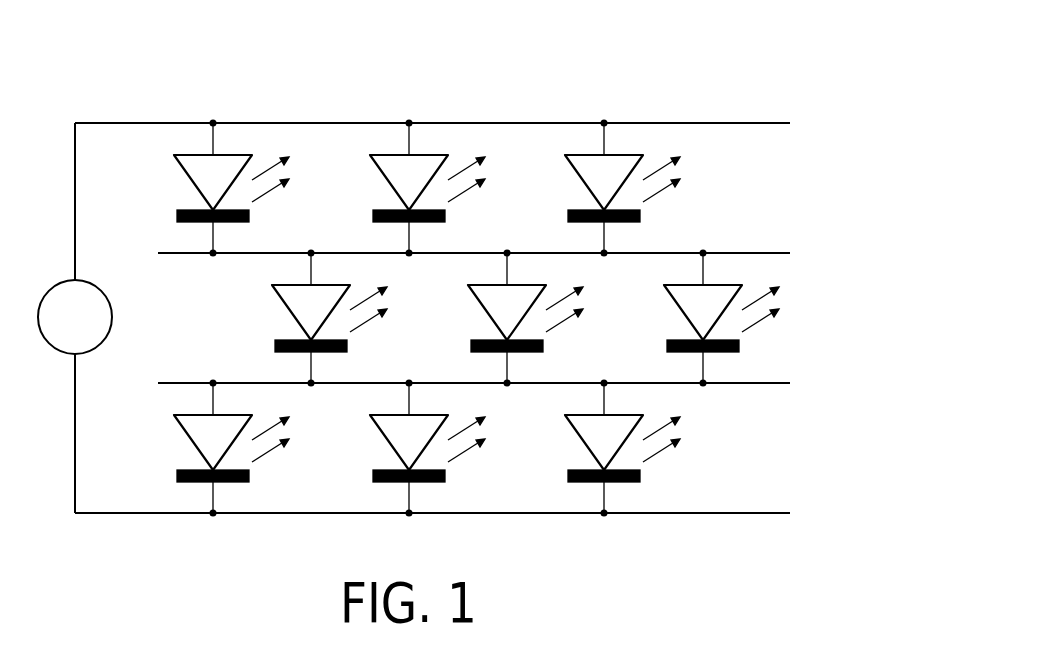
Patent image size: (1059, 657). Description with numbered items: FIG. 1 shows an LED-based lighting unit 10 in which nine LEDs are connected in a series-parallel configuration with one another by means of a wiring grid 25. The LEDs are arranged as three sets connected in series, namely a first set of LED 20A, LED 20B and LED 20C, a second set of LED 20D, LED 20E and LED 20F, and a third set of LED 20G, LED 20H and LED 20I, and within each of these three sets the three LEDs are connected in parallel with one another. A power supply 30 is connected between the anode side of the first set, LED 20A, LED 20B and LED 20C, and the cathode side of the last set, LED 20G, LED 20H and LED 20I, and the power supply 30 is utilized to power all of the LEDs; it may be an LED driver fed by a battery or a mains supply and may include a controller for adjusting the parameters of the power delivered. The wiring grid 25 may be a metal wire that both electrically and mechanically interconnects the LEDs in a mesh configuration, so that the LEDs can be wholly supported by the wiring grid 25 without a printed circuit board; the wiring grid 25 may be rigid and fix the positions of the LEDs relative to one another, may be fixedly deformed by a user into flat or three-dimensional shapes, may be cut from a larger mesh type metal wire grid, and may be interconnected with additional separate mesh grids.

The LED-based lighting unit 10 is at (727, 81).
The wiring grid 25 is at (137, 123).
The power supply 30 is at (48, 292).
The LED 20A is at (195, 189).
The LED 20B is at (391, 189).
The LED 20C is at (586, 189).
The LED 20D is at (293, 319).
The LED 20E is at (489, 319).
The LED 20F is at (685, 319).
The LED 20G is at (195, 449).
The LED 20H is at (391, 449).
The LED 20I is at (586, 449).